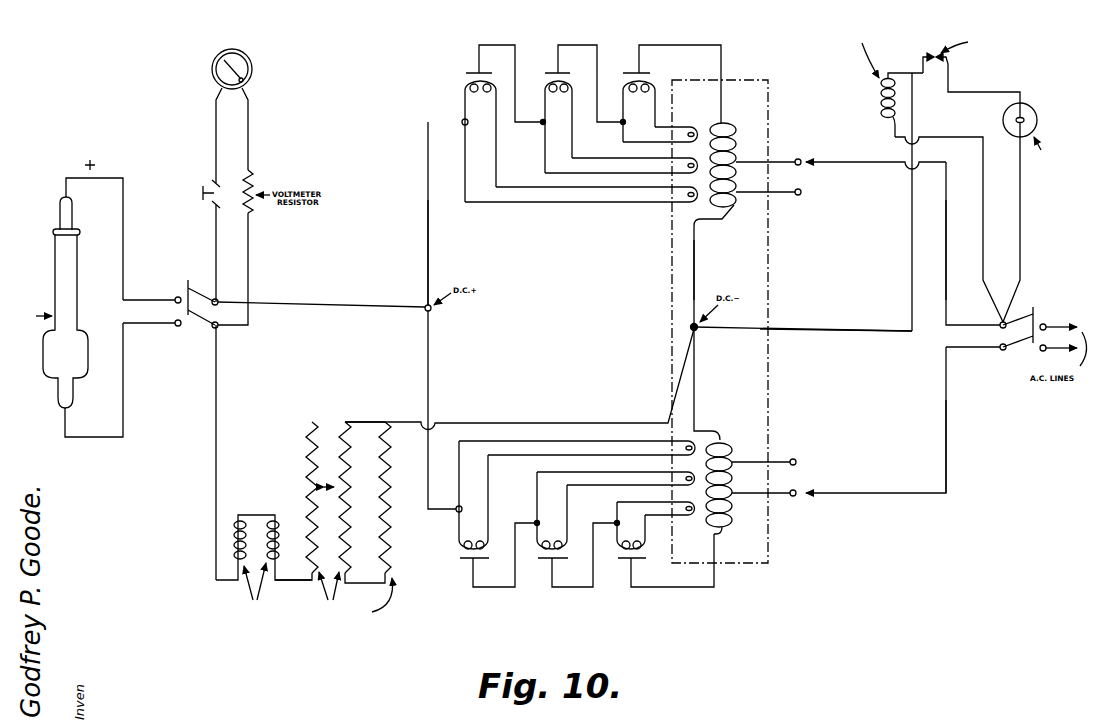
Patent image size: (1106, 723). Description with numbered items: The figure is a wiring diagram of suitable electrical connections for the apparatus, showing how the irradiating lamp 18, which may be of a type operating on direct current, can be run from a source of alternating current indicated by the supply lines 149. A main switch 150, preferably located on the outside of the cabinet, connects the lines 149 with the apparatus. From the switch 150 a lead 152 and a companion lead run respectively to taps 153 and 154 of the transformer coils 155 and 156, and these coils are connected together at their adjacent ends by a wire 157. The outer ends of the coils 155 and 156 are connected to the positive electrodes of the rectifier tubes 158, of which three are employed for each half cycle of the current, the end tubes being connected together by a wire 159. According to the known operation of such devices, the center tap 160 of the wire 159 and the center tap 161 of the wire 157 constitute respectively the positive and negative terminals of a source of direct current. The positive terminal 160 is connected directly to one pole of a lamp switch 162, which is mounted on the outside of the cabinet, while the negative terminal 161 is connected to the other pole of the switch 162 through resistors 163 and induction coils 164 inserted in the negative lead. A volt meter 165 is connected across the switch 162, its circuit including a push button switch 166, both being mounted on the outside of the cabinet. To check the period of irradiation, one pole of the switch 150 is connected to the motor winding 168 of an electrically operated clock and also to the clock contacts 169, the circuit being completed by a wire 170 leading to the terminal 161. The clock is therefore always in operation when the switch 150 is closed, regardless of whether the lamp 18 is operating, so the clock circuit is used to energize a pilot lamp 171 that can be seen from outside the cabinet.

The lamp 18 is at (72, 283).
The supply lines 149 is at (1057, 348).
The main switch 150 is at (1022, 343).
The lead 152 is at (947, 479).
The tap 153 is at (795, 160).
The tap 154 is at (779, 496).
The transformer coil 155 is at (746, 119).
The transformer coil 156 is at (731, 463).
The wire 157 is at (698, 292).
The rectifier tubes 158 is at (478, 82).
The wire 159 is at (427, 291).
The center tap 160 is at (426, 311).
The center tap 161 is at (696, 332).
The lamp switch 162 is at (203, 322).
The resistors 163 is at (316, 441).
The induction coils 164 is at (263, 517).
The volt meter 165 is at (251, 76).
The push button switch 166 is at (204, 190).
The motor winding 168 is at (880, 108).
The clock contacts 169 is at (950, 76).
The wire 170 is at (822, 332).
The pilot lamp 171 is at (1037, 126).